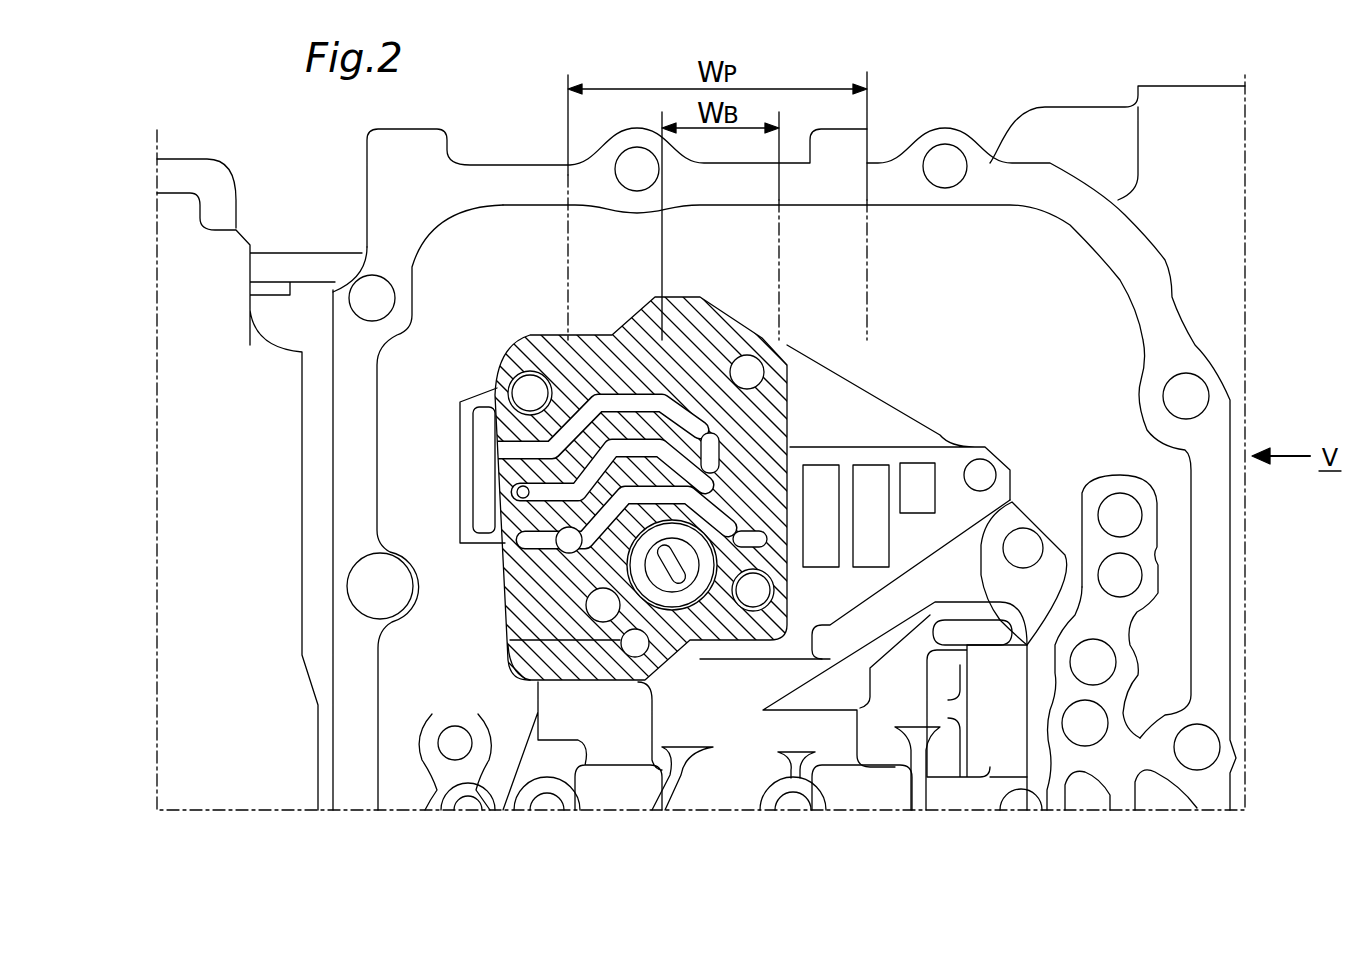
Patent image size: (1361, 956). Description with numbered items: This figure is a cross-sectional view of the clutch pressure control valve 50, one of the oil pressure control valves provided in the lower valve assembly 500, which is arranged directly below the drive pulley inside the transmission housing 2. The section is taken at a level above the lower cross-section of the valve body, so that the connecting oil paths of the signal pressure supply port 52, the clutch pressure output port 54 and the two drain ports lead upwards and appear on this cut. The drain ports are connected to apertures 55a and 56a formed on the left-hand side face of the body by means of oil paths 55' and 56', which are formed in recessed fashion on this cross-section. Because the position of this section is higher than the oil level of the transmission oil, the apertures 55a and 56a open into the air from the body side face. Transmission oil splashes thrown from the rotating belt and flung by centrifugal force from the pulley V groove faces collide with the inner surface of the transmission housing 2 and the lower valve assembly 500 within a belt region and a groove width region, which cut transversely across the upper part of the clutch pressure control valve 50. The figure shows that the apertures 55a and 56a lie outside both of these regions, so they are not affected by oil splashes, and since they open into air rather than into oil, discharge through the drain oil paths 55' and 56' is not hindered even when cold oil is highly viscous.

The transmission housing 2 is at (958, 122).
The clutch pressure control valve 50 is at (921, 388).
The signal pressure port 52 is at (790, 568).
The clutch pressure output port 54 is at (672, 583).
The aperture 55a is at (502, 652).
The oil path 55' is at (566, 688).
The aperture 56a is at (499, 463).
The oil path 56' is at (625, 488).
The lower valve assembly 500 is at (1005, 757).